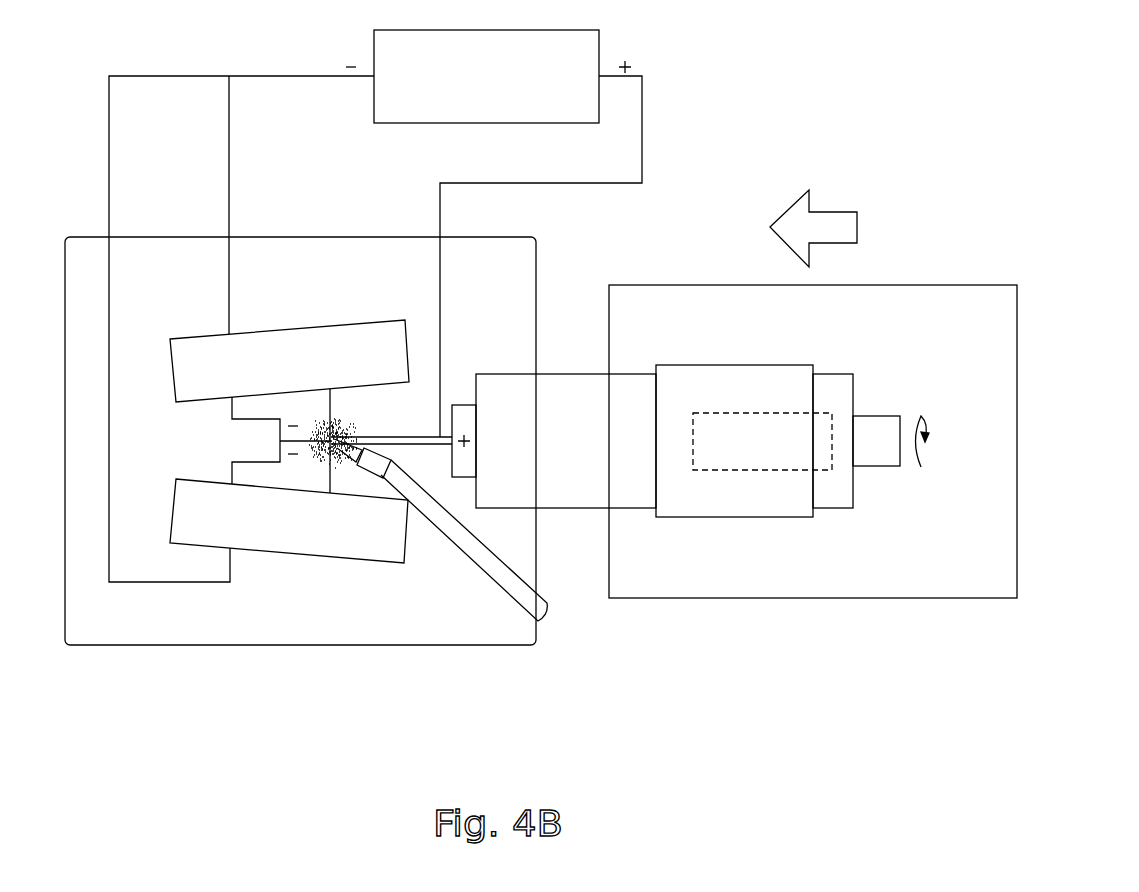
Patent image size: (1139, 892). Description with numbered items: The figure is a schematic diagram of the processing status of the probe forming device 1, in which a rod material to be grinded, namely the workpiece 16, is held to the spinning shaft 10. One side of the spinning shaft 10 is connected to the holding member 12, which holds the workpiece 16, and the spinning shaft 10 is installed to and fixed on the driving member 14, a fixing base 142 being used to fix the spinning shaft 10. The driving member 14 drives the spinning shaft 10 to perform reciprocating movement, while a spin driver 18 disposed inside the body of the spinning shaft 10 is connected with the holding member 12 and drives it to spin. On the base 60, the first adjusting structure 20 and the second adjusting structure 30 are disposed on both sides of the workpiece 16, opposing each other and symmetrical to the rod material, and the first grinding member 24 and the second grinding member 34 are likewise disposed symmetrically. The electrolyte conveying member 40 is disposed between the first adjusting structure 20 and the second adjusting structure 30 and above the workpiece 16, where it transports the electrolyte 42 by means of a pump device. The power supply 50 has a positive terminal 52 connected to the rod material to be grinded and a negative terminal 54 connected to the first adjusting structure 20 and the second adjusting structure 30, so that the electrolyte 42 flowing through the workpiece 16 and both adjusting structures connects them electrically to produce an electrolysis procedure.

The probe forming device 1 is at (1108, 72).
The spinning shaft 10 is at (578, 408).
The holding member 12 is at (459, 410).
The driving member 14 is at (983, 297).
The fixing base 142 is at (717, 390).
The workpiece 16 is at (414, 447).
The spin driver 18 is at (765, 455).
The first adjusting structure 20 is at (284, 367).
The first grinding member 24 is at (243, 404).
The second adjusting structure 30 is at (297, 535).
The second grinding member 34 is at (243, 475).
The electrolyte conveying member 40 is at (517, 593).
The electrolyte 42 is at (345, 423).
The power supply 50 is at (565, 52).
The positive terminal 52 is at (608, 61).
The negative terminal 54 is at (366, 63).
The base 60 is at (150, 620).